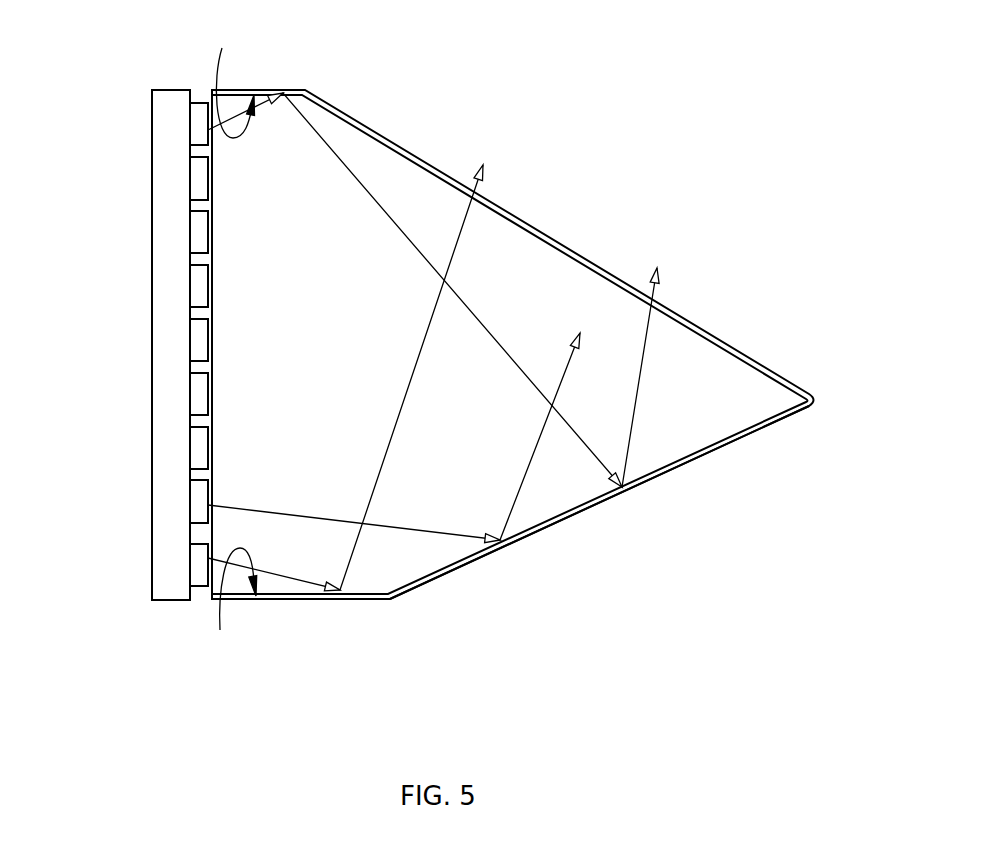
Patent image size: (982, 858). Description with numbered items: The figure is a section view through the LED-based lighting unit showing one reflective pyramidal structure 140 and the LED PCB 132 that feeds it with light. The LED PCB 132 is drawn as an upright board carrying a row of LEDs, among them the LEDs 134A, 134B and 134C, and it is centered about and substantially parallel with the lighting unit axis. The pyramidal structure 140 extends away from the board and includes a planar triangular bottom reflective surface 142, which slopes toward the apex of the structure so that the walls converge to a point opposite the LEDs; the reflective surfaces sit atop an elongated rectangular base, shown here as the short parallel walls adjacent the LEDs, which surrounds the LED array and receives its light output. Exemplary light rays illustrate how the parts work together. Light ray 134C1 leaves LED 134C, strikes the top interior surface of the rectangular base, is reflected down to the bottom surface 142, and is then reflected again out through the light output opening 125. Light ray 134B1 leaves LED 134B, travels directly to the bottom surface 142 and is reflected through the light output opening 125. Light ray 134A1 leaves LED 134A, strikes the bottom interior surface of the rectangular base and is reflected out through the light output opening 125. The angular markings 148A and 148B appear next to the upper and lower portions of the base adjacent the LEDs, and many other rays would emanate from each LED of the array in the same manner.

The light output opening 125 is at (560, 208).
The LED PCB 132 is at (168, 397).
The LED 134A is at (200, 565).
The LED 134B is at (197, 497).
The LED 134C is at (196, 123).
The light ray 134A1 is at (290, 582).
The light ray 134B1 is at (265, 511).
The light ray 134C1 is at (362, 185).
The reflective pyramidal structure 140 is at (768, 263).
The bottom reflective surface 142 is at (671, 445).
The emission angle A 148A is at (222, 82).
The emission angle B 148B is at (226, 605).